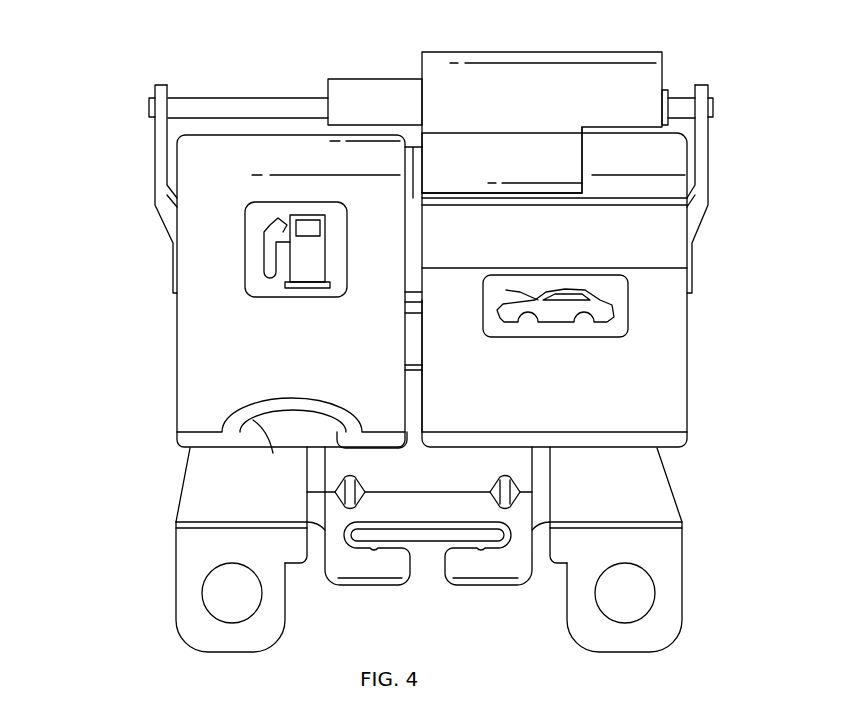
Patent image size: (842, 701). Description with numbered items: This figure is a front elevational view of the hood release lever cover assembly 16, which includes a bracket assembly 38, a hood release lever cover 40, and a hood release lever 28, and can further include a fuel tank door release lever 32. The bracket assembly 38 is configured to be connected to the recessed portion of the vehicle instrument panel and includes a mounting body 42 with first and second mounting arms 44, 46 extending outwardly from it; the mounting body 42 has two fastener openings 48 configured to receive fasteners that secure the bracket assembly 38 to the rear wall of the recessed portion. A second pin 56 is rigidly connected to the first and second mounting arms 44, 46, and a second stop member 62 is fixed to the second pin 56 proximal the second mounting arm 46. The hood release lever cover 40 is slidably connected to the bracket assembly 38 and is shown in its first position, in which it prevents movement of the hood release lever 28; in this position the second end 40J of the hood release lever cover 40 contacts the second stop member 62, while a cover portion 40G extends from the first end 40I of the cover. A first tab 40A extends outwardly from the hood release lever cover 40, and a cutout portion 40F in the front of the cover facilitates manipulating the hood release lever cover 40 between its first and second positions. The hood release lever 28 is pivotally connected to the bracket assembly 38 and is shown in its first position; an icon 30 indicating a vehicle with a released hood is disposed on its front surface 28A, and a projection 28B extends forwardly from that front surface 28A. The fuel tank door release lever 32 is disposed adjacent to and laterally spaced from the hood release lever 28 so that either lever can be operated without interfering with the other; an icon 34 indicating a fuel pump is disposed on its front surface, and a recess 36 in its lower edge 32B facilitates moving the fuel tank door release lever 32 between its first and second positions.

The hood release lever cover assembly 16 is at (98, 245).
The hood release lever 28 is at (670, 448).
The front surface 28A is at (648, 396).
The projection 28B is at (648, 237).
The icon 30 is at (552, 337).
The fuel tank door release lever 32 is at (208, 386).
The lower edge 32B is at (208, 450).
The icon 34 is at (277, 297).
The recess 36 is at (269, 451).
The bracket assembly 38 is at (692, 555).
The hood release lever cover 40 is at (548, 52).
The first tab 40A is at (475, 155).
The cutout portion 40F is at (583, 165).
The cover portion 40G is at (355, 100).
The first end 40I is at (420, 66).
The second end 40J is at (664, 70).
The mounting body 42 is at (176, 565).
The first mounting arm 44 is at (155, 160).
The second mounting arm 46 is at (708, 158).
The fastener opening 48 is at (212, 605).
The second pin 56 is at (242, 97).
The second stop member 62 is at (668, 86).